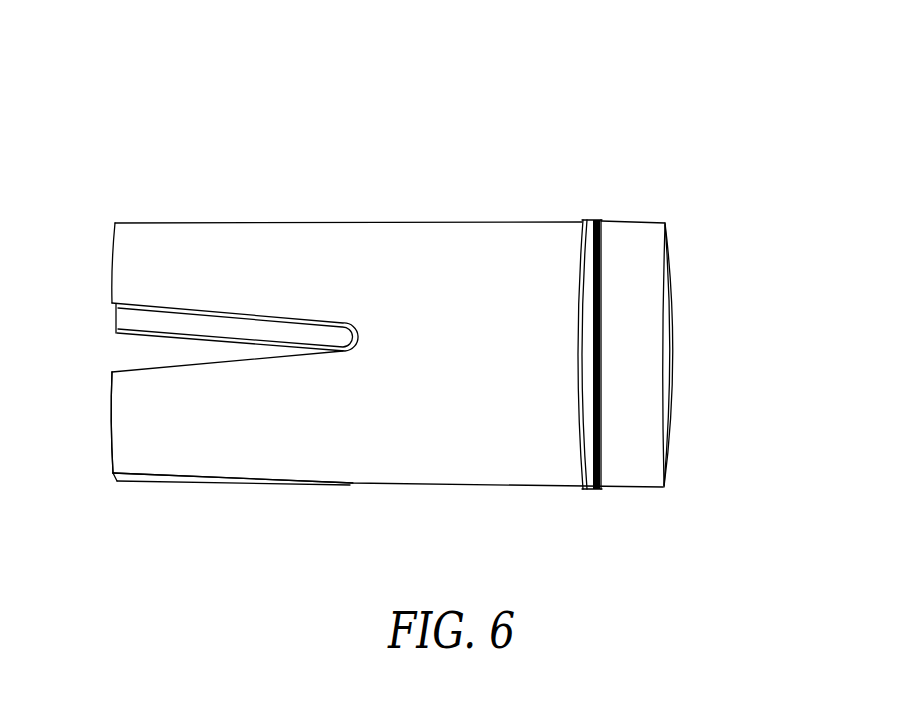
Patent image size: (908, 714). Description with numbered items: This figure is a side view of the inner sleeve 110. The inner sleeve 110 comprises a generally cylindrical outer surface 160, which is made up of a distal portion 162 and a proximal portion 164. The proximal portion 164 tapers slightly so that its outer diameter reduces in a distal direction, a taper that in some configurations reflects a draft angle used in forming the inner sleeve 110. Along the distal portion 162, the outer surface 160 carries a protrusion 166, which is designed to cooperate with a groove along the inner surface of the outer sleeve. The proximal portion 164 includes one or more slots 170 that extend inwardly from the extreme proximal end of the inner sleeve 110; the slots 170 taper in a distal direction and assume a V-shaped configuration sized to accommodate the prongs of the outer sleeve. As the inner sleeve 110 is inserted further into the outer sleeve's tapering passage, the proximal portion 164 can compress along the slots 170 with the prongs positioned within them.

The inner sleeve 110 is at (761, 133).
The outer surface 160 is at (454, 267).
The distal portion 162 is at (641, 240).
The proximal portion 164 is at (155, 257).
The protrusion 166 is at (592, 225).
The slots 170 is at (215, 370).